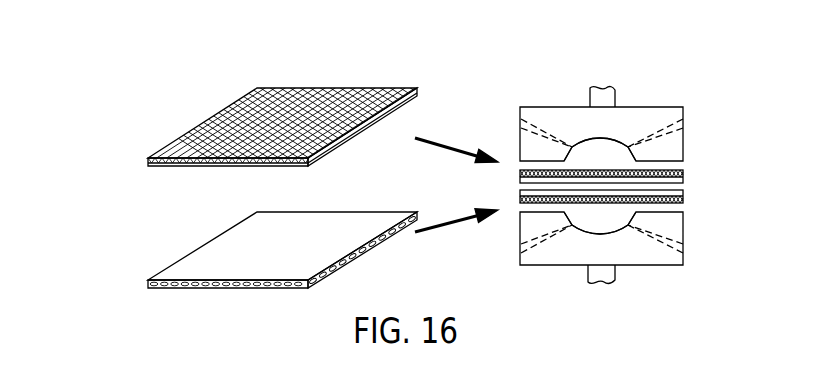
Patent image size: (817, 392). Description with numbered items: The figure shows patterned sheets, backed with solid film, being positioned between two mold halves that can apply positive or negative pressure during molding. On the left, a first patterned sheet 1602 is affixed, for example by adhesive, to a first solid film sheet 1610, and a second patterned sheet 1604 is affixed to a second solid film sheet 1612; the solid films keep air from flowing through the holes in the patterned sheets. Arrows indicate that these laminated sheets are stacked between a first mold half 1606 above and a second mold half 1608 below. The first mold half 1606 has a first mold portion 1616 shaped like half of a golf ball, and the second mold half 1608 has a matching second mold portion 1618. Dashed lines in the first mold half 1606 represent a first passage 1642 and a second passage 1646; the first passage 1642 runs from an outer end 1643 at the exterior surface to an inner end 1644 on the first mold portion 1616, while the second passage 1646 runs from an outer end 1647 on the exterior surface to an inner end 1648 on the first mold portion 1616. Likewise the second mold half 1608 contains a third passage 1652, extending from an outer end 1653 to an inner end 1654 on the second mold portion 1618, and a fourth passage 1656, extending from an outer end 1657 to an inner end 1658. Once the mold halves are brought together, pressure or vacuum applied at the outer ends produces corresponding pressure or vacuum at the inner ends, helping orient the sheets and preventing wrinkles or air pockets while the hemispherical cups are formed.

The first patterned sheet 1602 is at (228, 113).
The second patterned sheet 1604 is at (365, 253).
The first mold half 1606 is at (624, 112).
The second mold half 1608 is at (636, 258).
The first solid film sheet 1610 is at (373, 120).
The second solid film sheet 1612 is at (213, 245).
The first mold portion 1616 is at (592, 140).
The second mold portion 1618 is at (598, 232).
The first passage 1642 is at (543, 128).
The upper die second angled line 1643 is at (522, 122).
The inner end of first passage 1644 is at (575, 150).
The second passage 1646 is at (661, 128).
The outer end of second passage 1647 is at (683, 118).
The inner end of second passage 1648 is at (683, 140).
The third passage 1652 is at (550, 238).
The outer end of third passage 1653 is at (522, 250).
The inner end of third passage 1654 is at (572, 229).
The fourth passage 1656 is at (662, 245).
The outer end of fourth passage 1657 is at (683, 248).
The inner end of fourth passage 1658 is at (630, 223).